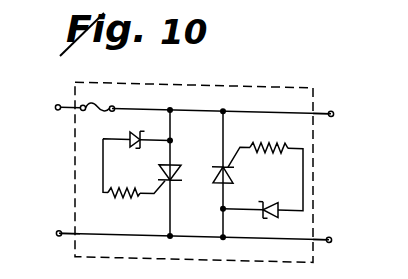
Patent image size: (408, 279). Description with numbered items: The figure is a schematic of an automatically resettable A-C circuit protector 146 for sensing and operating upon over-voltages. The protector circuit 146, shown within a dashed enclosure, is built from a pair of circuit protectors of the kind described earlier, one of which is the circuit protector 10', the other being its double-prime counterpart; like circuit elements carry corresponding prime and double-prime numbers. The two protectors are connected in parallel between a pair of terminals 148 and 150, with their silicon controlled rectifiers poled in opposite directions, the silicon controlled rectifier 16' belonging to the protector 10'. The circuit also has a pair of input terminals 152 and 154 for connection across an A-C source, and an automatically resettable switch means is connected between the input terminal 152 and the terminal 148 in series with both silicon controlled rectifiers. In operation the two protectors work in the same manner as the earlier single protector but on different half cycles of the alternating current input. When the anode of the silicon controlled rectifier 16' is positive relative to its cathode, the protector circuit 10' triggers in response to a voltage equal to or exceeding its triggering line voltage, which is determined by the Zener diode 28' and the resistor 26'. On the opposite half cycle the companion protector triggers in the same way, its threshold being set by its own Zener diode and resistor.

The circuit protector 146 is at (222, 79).
The terminal 148 is at (333, 108).
The terminal 150 is at (331, 234).
The input terminal 152 is at (58, 107).
The input terminal 154 is at (59, 233).
The circuit protector 10' is at (136, 166).
The silicon controlled rectifier 16' is at (183, 164).
The resistor 26' is at (125, 203).
The Zener diode 28' is at (143, 130).